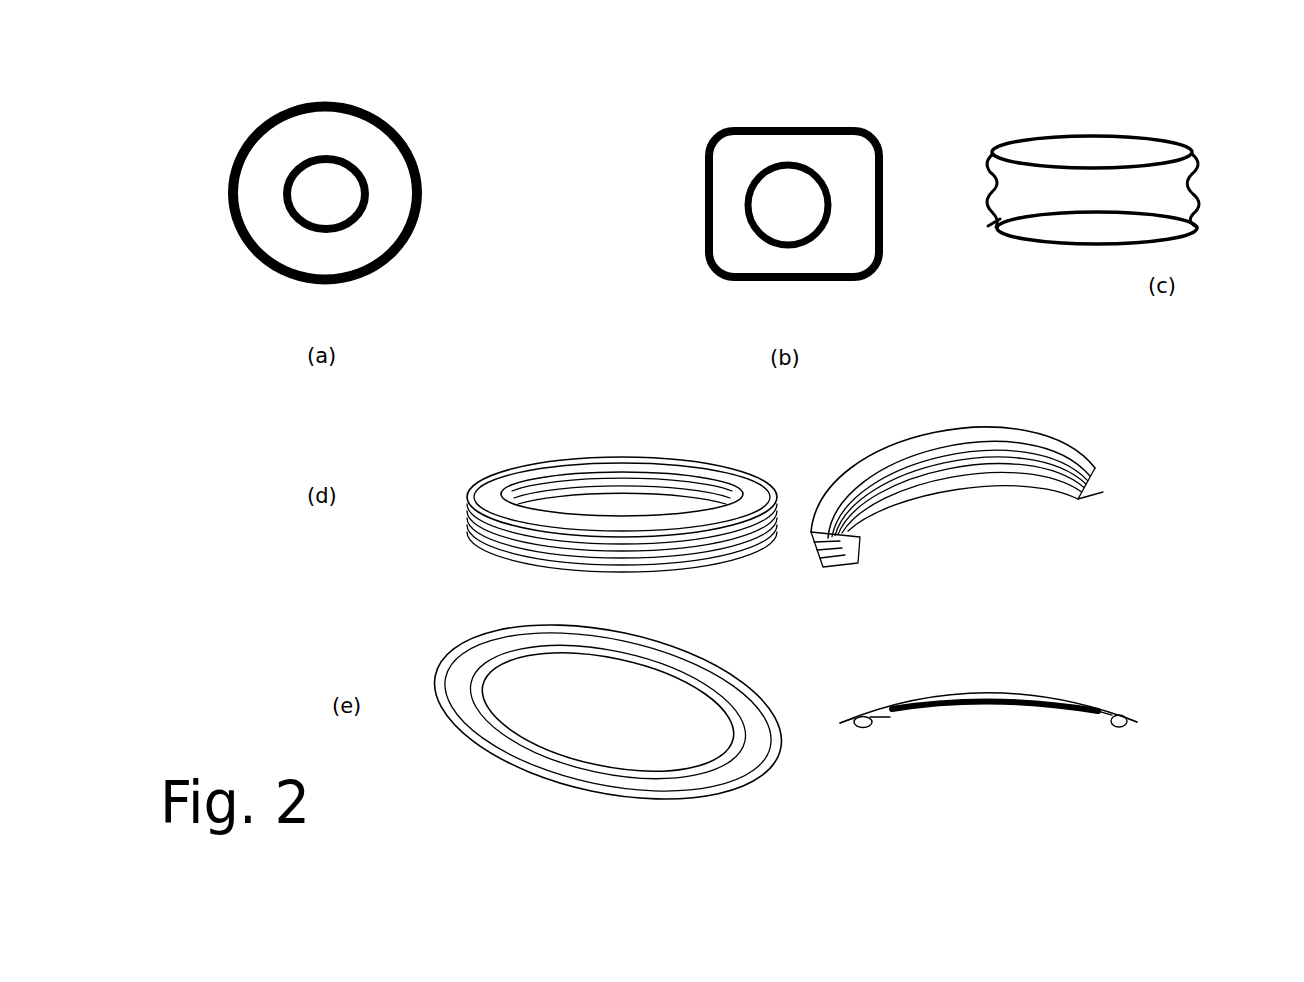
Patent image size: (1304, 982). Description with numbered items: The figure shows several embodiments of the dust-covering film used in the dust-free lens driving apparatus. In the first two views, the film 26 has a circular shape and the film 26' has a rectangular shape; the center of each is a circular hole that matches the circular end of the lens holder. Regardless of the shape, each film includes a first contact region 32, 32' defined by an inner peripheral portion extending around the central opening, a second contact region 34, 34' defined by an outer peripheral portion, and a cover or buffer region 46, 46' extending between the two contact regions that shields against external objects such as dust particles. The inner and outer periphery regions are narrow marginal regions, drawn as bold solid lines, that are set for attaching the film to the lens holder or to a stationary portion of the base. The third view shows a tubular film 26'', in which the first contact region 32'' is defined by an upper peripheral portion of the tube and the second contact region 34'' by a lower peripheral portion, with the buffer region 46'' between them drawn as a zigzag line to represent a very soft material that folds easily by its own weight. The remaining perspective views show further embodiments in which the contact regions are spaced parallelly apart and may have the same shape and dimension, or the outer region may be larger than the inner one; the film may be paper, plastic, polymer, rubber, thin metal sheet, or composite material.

The dust-covering film 26 is at (695, 401).
The first contact region 32 is at (699, 480).
The second contact region 34 is at (692, 467).
The buffer region 46 is at (682, 476).
The dust-covering film 26' is at (825, 156).
The first contact region 32' is at (730, 205).
The second contact region 34' is at (758, 190).
The buffer region 46' is at (753, 204).
The dust-covering film 26'' is at (874, 299).
The first contact region 32'' is at (854, 322).
The second contact region 34'' is at (867, 389).
The buffer region 46'' is at (839, 363).